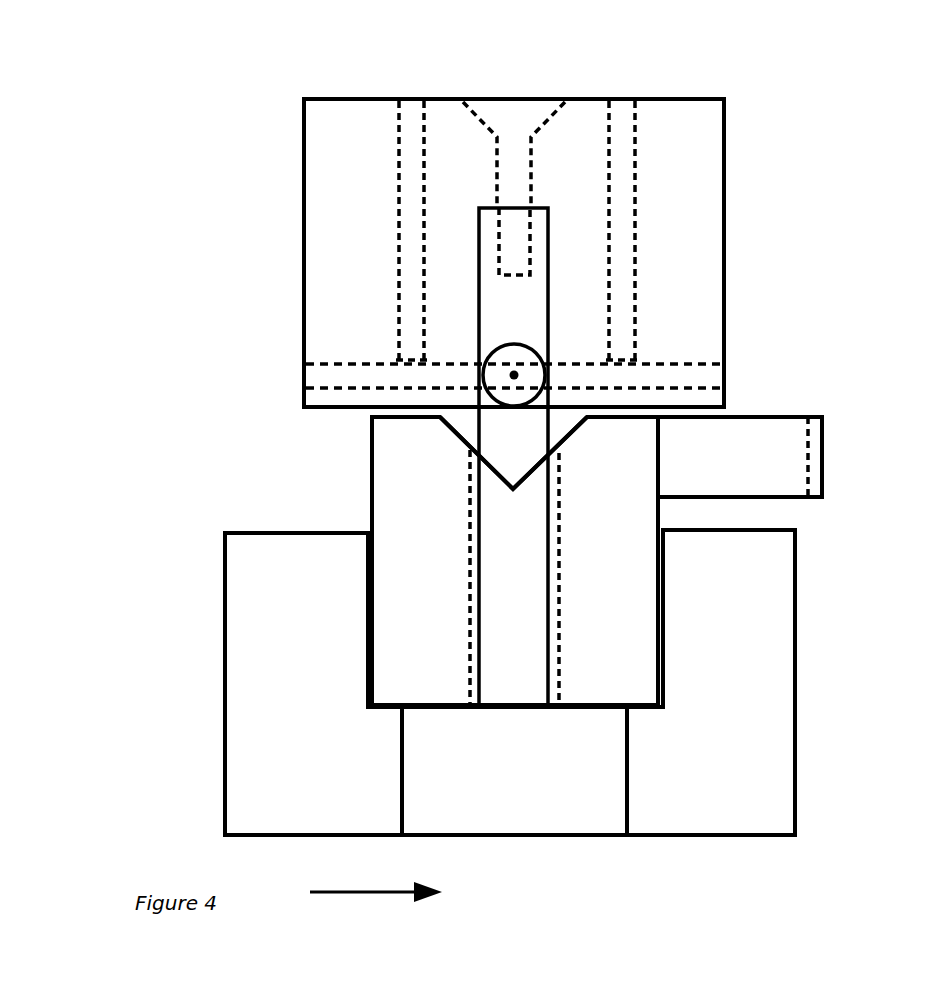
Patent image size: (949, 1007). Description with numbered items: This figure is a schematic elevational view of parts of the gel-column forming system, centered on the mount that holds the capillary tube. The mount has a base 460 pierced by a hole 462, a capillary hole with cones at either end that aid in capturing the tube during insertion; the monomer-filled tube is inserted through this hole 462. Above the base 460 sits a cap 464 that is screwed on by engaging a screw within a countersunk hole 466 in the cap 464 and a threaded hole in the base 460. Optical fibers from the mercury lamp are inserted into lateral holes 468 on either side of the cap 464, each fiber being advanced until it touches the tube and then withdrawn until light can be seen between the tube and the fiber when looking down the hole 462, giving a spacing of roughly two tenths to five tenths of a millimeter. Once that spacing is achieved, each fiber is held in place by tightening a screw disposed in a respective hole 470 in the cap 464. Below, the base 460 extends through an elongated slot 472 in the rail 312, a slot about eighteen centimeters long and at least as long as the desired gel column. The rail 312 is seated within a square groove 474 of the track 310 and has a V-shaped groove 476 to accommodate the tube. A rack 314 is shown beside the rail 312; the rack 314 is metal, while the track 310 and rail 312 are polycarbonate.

The track 310 is at (510, 682).
The rail 312 is at (515, 561).
The rack 314 is at (822, 457).
The base 460 is at (503, 533).
The hole 462 is at (514, 375).
The cap 464 is at (738, 138).
The countersunk hole 466 is at (497, 100).
The lateral holes 468 is at (300, 376).
The hole 470 is at (411, 100).
The elongated slot 472 is at (561, 652).
The square groove 474 is at (370, 530).
The V-shaped groove 476 is at (440, 418).